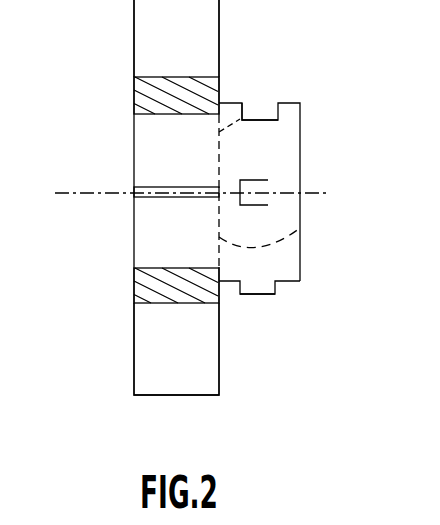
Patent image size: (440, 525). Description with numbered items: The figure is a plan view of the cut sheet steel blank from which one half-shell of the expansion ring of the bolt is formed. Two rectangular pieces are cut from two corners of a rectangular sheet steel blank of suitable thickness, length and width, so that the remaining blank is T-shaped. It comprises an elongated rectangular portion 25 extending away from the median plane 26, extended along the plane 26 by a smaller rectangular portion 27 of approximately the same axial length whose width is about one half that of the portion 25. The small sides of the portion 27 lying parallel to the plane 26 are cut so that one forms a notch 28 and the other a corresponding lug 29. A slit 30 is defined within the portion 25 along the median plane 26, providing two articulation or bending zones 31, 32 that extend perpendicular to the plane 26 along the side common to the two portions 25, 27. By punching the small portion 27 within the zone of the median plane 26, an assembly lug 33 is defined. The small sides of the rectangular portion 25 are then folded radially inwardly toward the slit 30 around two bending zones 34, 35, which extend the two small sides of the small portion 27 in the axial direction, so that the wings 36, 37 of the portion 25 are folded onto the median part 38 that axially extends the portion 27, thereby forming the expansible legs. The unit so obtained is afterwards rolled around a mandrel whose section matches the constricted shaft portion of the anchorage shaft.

The elongated rectangular portion 25 is at (148, 398).
The median plane 26 is at (77, 194).
The smaller rectangular portion 27 is at (258, 297).
The notch 28 is at (278, 112).
The lug 29 is at (268, 285).
The slit 30 is at (133, 192).
The articulation or bending zone 31 is at (247, 115).
The articulation or bending zone 32 is at (300, 228).
The assembly lug 33 is at (255, 191).
The bending zone 34 is at (147, 290).
The bending zone 35 is at (147, 92).
The wing 36 is at (188, 22).
The wing 37 is at (193, 382).
The median part 38 is at (157, 230).